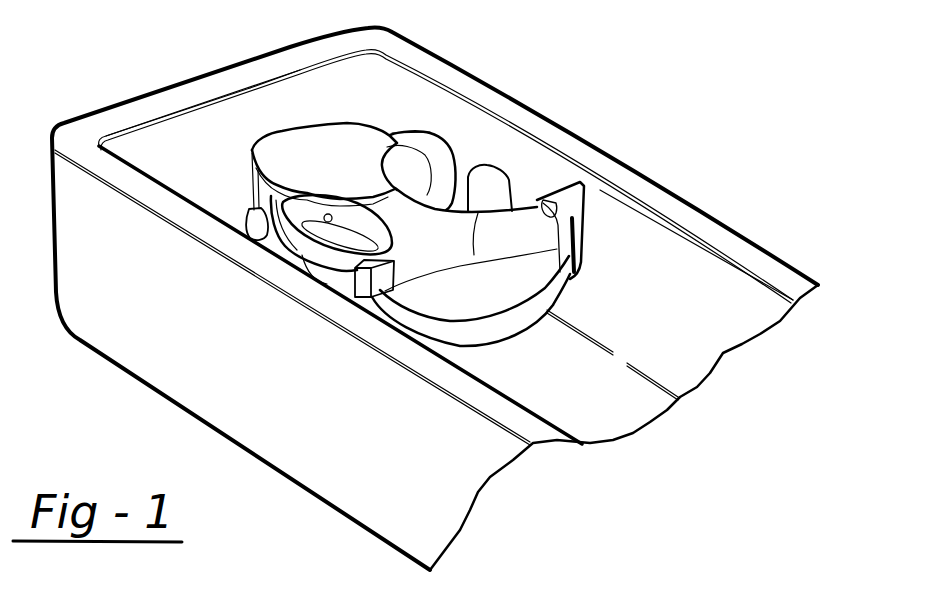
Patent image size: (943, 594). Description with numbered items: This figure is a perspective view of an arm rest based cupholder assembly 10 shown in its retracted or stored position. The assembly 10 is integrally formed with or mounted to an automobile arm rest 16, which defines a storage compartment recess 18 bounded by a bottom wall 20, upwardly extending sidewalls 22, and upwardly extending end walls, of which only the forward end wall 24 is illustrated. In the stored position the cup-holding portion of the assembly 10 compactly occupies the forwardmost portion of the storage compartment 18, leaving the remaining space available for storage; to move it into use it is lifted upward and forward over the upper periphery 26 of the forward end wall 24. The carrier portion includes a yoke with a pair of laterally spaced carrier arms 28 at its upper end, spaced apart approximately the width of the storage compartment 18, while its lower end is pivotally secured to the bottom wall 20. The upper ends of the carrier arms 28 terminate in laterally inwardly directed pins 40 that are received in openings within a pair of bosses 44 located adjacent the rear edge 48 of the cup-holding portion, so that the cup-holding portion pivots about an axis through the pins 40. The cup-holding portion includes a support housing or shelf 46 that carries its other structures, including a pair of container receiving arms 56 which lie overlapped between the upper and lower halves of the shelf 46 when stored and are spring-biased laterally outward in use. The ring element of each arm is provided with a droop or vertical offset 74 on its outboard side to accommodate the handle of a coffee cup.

The cupholder assembly 10 is at (533, 82).
The arm rest 16 is at (710, 208).
The storage compartment recess 18 is at (650, 340).
The bottom wall 20 is at (610, 400).
The sidewalls 22 is at (733, 283).
The forward end wall 24 is at (160, 137).
The upper periphery 26 is at (303, 58).
The carrier arms 28 is at (592, 225).
The pins 40 is at (581, 177).
The bosses 44 is at (540, 195).
The shelf 46 is at (338, 170).
The rear edge 48 is at (487, 163).
The container receiving arms 56 is at (403, 128).
The vertical offset 74 is at (457, 172).